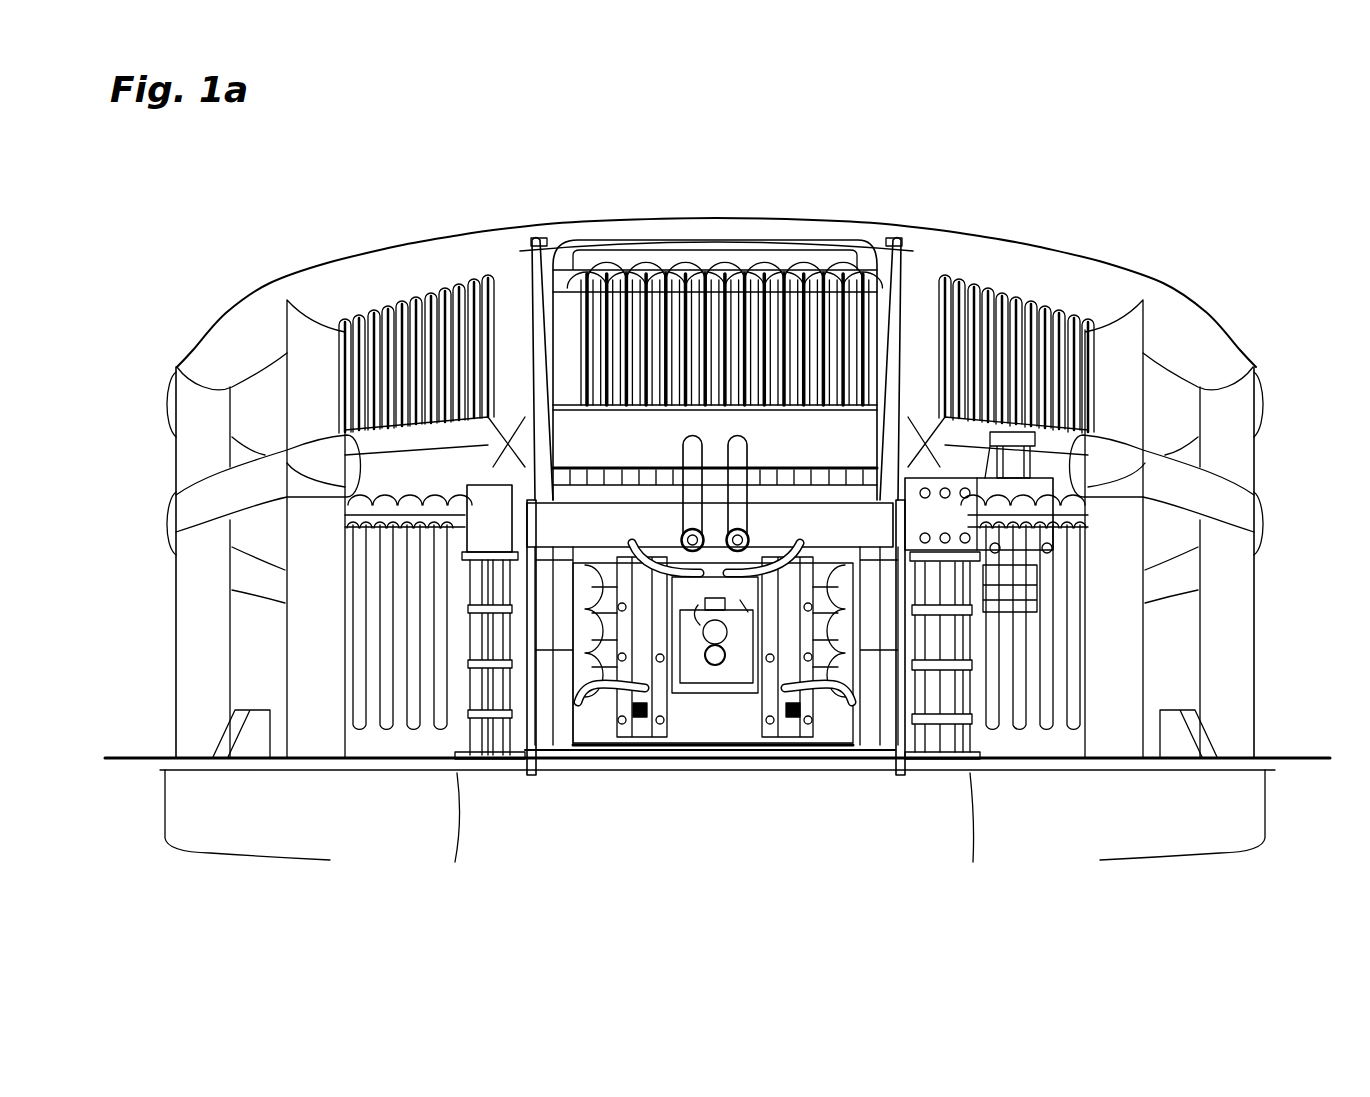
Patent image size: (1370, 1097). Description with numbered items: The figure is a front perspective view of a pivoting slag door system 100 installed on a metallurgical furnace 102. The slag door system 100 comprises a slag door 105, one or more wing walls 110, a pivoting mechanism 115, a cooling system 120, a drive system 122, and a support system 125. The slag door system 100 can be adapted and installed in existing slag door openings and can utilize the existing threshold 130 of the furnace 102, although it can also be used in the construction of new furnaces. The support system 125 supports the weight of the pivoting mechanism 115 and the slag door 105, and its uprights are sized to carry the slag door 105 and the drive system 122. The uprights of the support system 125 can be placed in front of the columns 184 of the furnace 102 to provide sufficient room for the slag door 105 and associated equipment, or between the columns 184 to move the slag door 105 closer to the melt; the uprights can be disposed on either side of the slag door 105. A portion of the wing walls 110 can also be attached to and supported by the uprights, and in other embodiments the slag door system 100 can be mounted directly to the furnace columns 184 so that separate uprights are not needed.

The slag door system 100 is at (680, 780).
The metallurgical furnace 102 is at (540, 218).
The slag door 105 is at (742, 758).
The wing walls 110 is at (528, 772).
The pivoting mechanism 115 is at (636, 520).
The cooling system 120 is at (826, 708).
The drive system 122 is at (1118, 462).
The support system 125 is at (483, 775).
The threshold 130 is at (713, 760).
The columns 184 is at (910, 278).